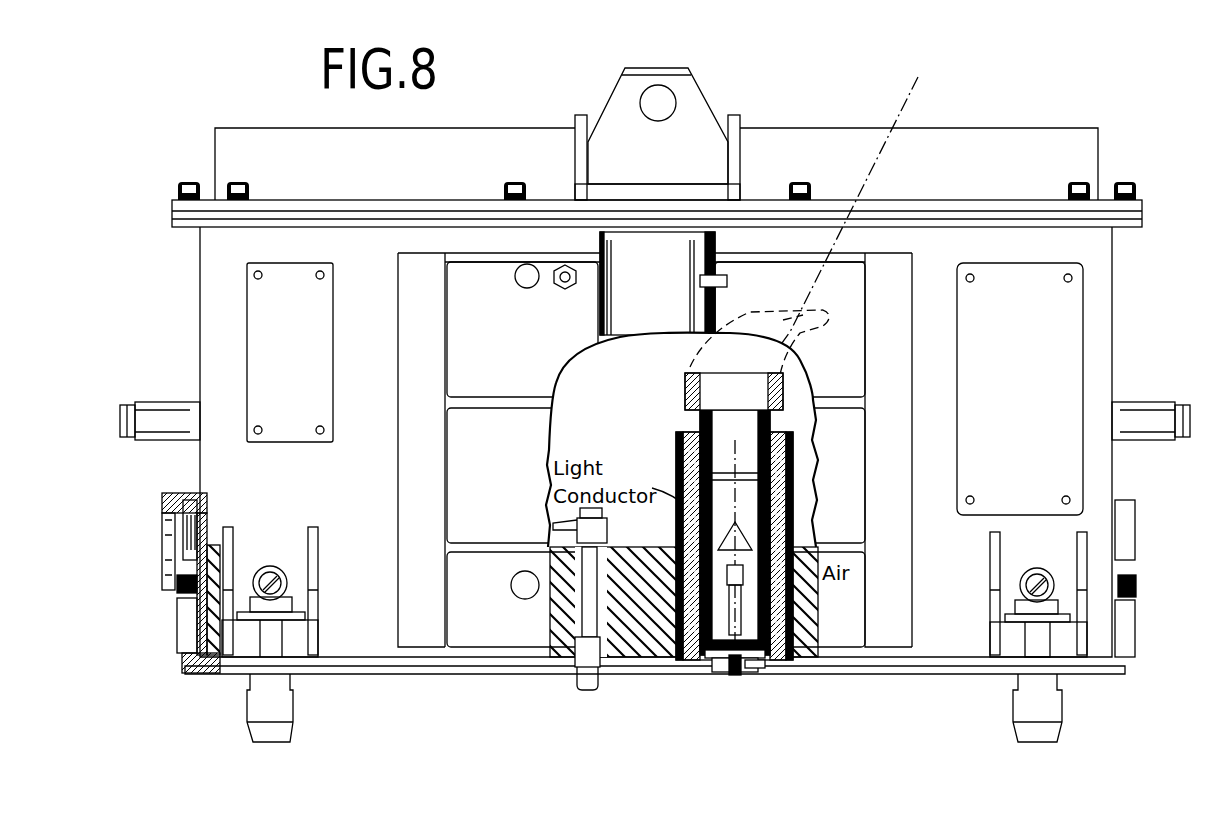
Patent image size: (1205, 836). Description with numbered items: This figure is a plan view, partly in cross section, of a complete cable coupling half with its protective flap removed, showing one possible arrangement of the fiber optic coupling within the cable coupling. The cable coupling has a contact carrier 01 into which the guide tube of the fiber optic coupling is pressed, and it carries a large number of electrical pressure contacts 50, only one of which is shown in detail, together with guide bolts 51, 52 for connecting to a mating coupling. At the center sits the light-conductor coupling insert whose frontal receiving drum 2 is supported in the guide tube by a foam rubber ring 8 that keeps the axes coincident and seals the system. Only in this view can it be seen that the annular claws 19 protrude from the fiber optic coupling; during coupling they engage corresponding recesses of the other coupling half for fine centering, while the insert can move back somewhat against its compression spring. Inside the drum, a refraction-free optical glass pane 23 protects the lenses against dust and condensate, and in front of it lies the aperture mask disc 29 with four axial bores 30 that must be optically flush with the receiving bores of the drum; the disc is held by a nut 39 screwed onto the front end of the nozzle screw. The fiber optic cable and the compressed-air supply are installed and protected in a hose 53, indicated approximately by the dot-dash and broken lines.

The receiving drum 2 is at (780, 637).
The foam rubber ring 8 is at (780, 672).
The annular claws 19 is at (725, 693).
The optical glass pane 23 is at (690, 630).
The aperture mask disc 29 is at (758, 672).
The axial bores 30 is at (705, 665).
The nut 39 is at (732, 685).
The electrical pressure contacts 50 is at (585, 690).
The guide bolt 51 is at (290, 700).
The guide bolt 52 is at (1060, 710).
The hose 53 is at (805, 333).
The contact carrier 01 is at (656, 594).